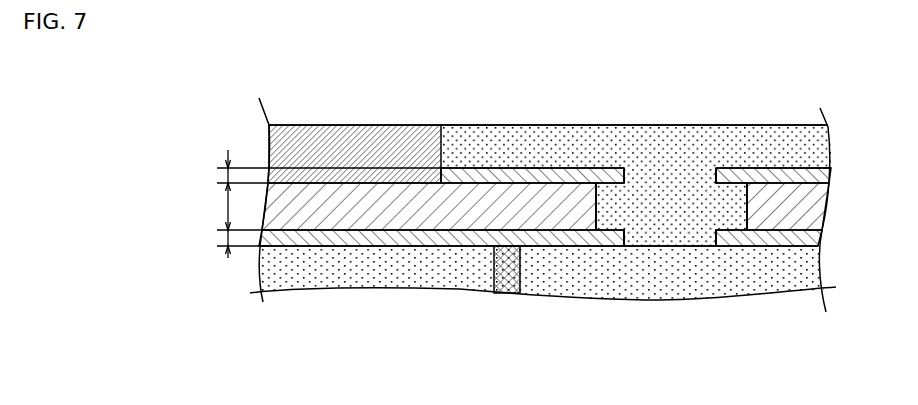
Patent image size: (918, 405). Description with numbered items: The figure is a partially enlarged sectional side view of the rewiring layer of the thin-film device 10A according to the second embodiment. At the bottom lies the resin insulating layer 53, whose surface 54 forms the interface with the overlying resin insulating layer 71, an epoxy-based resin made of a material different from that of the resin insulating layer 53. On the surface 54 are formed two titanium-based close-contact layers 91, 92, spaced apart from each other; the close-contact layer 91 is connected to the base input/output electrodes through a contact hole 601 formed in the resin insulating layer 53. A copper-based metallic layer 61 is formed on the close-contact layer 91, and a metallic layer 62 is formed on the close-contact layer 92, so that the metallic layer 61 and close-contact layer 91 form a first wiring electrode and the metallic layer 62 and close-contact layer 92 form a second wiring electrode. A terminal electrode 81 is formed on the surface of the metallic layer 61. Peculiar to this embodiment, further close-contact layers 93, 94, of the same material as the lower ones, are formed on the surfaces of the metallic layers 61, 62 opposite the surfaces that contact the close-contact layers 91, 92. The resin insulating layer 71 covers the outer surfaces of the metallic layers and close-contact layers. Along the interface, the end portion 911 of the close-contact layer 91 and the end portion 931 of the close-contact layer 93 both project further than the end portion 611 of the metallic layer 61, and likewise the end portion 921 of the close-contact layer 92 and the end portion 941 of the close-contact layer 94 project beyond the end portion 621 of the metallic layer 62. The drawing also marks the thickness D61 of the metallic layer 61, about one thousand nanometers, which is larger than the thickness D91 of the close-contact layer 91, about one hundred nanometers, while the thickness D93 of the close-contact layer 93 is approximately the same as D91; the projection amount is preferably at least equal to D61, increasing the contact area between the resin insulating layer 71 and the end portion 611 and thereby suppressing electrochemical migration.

The thin-film device 10A is at (778, 51).
The resin insulating layer 71 is at (820, 148).
The terminal electrode 81 is at (374, 133).
The metallic layer 61 is at (308, 195).
The end portion of metallic layer 611 is at (600, 196).
The metallic layer 62 is at (813, 208).
The end portion of metallic layer 621 is at (741, 182).
The close-contact layer 93 is at (525, 174).
The end portion of close-contact layer 931 is at (631, 167).
The close-contact layer 94 is at (829, 173).
The end portion of close-contact layer 941 is at (709, 165).
The close-contact layer 91 is at (327, 240).
The end portion of close-contact layer 911 is at (632, 248).
The close-contact layer 92 is at (775, 240).
The end portion of close-contact layer 921 is at (708, 249).
The resin insulating layer 53 is at (288, 283).
The surface of resin insulating layer 54 is at (668, 256).
The contact hole 601 is at (507, 288).
The thickness of close-contact layer D93 is at (220, 168).
The thickness of metallic layer D61 is at (228, 206).
The thickness of close-contact layer D91 is at (221, 242).